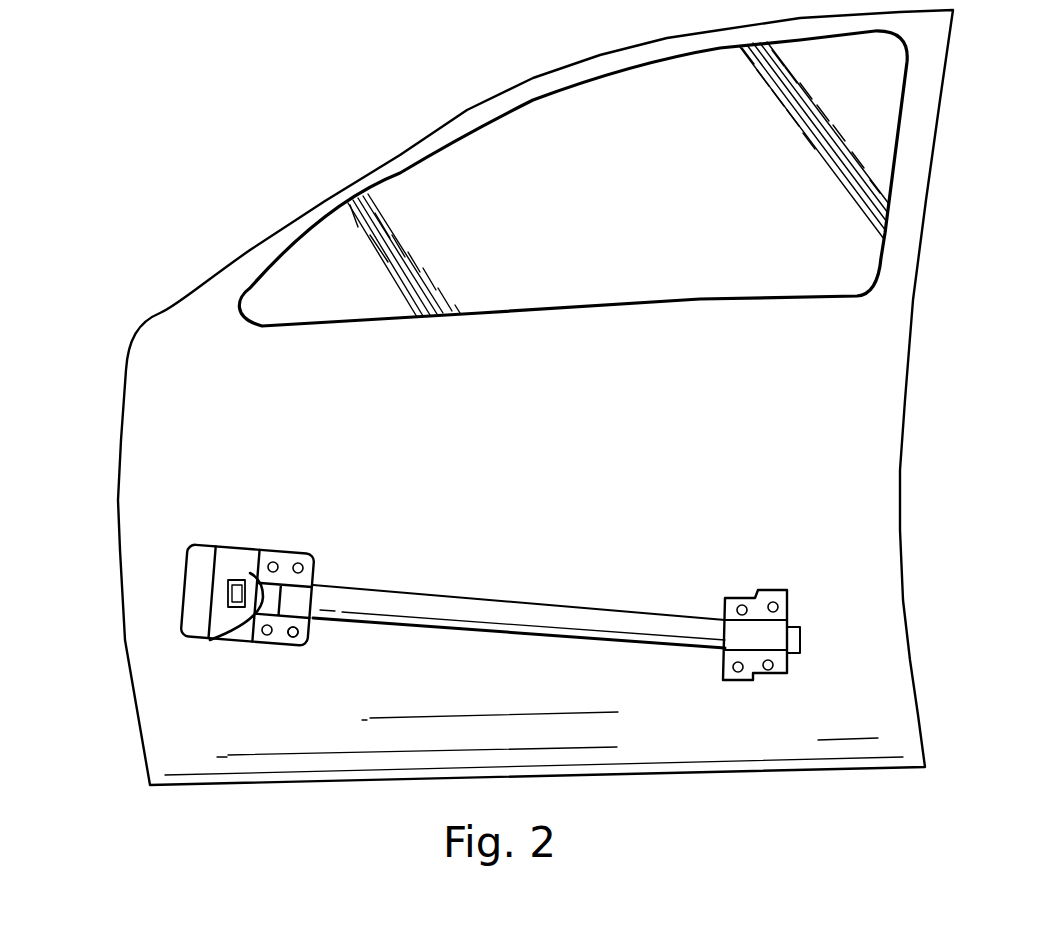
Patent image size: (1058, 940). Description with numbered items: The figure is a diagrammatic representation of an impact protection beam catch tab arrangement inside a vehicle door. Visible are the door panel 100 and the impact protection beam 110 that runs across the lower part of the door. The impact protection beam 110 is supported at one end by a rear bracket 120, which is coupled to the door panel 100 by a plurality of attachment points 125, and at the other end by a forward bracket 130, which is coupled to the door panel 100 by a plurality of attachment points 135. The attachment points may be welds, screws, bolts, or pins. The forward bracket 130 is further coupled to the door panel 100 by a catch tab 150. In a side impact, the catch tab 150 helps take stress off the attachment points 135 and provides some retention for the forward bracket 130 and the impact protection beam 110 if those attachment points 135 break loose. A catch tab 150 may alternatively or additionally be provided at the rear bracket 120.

The door panel 100 is at (120, 462).
The impact protection beam 110 is at (518, 603).
The rear bracket 120 is at (722, 666).
The attachment points 125 is at (742, 604).
The forward bracket 130 is at (232, 563).
The attachment points 135 is at (293, 638).
The catch tab 150 is at (238, 580).